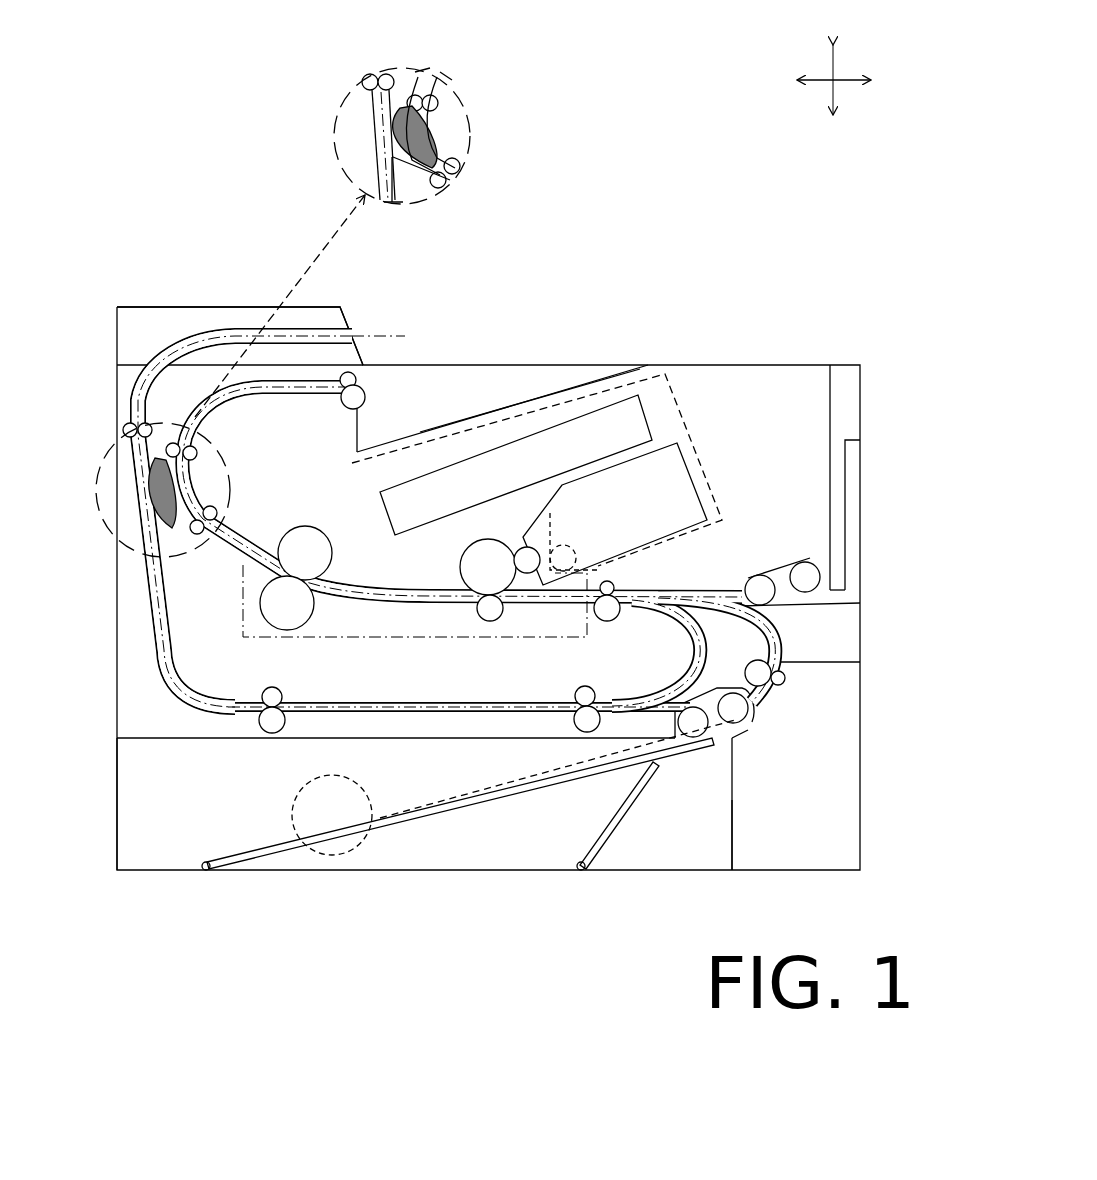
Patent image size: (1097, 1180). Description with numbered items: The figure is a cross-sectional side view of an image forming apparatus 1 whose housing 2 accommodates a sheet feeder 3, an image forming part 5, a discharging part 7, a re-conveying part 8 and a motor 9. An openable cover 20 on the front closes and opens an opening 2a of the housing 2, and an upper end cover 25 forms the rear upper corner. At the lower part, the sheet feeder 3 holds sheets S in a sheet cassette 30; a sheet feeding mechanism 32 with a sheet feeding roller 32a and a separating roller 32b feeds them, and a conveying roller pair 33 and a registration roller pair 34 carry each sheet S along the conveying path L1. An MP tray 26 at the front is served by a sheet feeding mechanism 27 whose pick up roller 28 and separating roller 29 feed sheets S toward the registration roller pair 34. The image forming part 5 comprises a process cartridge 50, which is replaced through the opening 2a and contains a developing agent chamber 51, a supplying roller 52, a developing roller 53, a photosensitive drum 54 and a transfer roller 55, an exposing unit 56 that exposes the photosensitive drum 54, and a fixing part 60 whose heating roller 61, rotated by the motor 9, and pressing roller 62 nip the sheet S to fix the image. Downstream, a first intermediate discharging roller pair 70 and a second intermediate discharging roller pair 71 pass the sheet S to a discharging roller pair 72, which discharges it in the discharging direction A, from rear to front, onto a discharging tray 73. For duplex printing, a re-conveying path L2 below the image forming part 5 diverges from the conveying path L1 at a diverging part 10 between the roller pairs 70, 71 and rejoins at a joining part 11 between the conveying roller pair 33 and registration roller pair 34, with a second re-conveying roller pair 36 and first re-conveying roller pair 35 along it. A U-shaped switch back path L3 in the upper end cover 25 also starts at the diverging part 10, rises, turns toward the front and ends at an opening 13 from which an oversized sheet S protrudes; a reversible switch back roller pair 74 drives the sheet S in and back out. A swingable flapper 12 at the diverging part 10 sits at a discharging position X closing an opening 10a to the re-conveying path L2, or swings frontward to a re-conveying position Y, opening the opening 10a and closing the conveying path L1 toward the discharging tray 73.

The image forming apparatus 1 is at (534, 270).
The housing 2 is at (782, 360).
The opening 2a is at (834, 430).
The sheet feeder 3 is at (674, 843).
The image forming part 5 is at (698, 433).
The discharging part 7 is at (433, 378).
The re-conveying part 8 is at (429, 700).
The motor 9 is at (333, 856).
The diverging part 10 is at (161, 452).
The opening 10a is at (178, 492).
The joining part 11 is at (637, 611).
The flapper 12 is at (160, 488).
The opening 13 is at (352, 332).
The openable cover 20 is at (855, 390).
The upper end cover 25 is at (232, 303).
The MP tray 26 is at (851, 538).
The sheet feeding mechanism 27 is at (783, 523).
The pick up roller 28 is at (805, 570).
The separating roller 29 is at (762, 583).
The sheet cassette 30 is at (117, 798).
The sheet feeding mechanism 32 is at (745, 753).
The sheet feeding roller 32a is at (696, 730).
The separating roller 32b is at (737, 715).
The conveying roller pair 33 is at (787, 679).
The registration roller pair 34 is at (614, 588).
The first re-conveying roller pair 35 is at (577, 695).
The second re-conveying roller pair 36 is at (281, 695).
The process cartridge 50 is at (533, 521).
The developing agent chamber 51 is at (624, 511).
The supplying roller 52 is at (562, 597).
The developing roller 53 is at (530, 572).
The photosensitive drum 54 is at (470, 565).
The transfer roller 55 is at (478, 609).
The exposing unit 56 is at (500, 480).
The fixing part 60 is at (321, 530).
The heating roller 61 is at (333, 553).
The pressing roller 62 is at (306, 615).
The first intermediate discharging roller pair 70 is at (218, 513).
The second intermediate discharging roller pair 71 is at (198, 453).
The discharging roller pair 72 is at (362, 393).
The discharging tray 73 is at (567, 380).
The switch back roller pair 74 is at (124, 430).
The conveying path L1 is at (711, 589).
The re-conveying path L2 is at (147, 606).
The switch back path L3 is at (172, 330).
The sheet S is at (438, 800).
The discharging position X is at (180, 540).
The re-conveying position Y is at (448, 168).
The discharging direction A is at (405, 387).